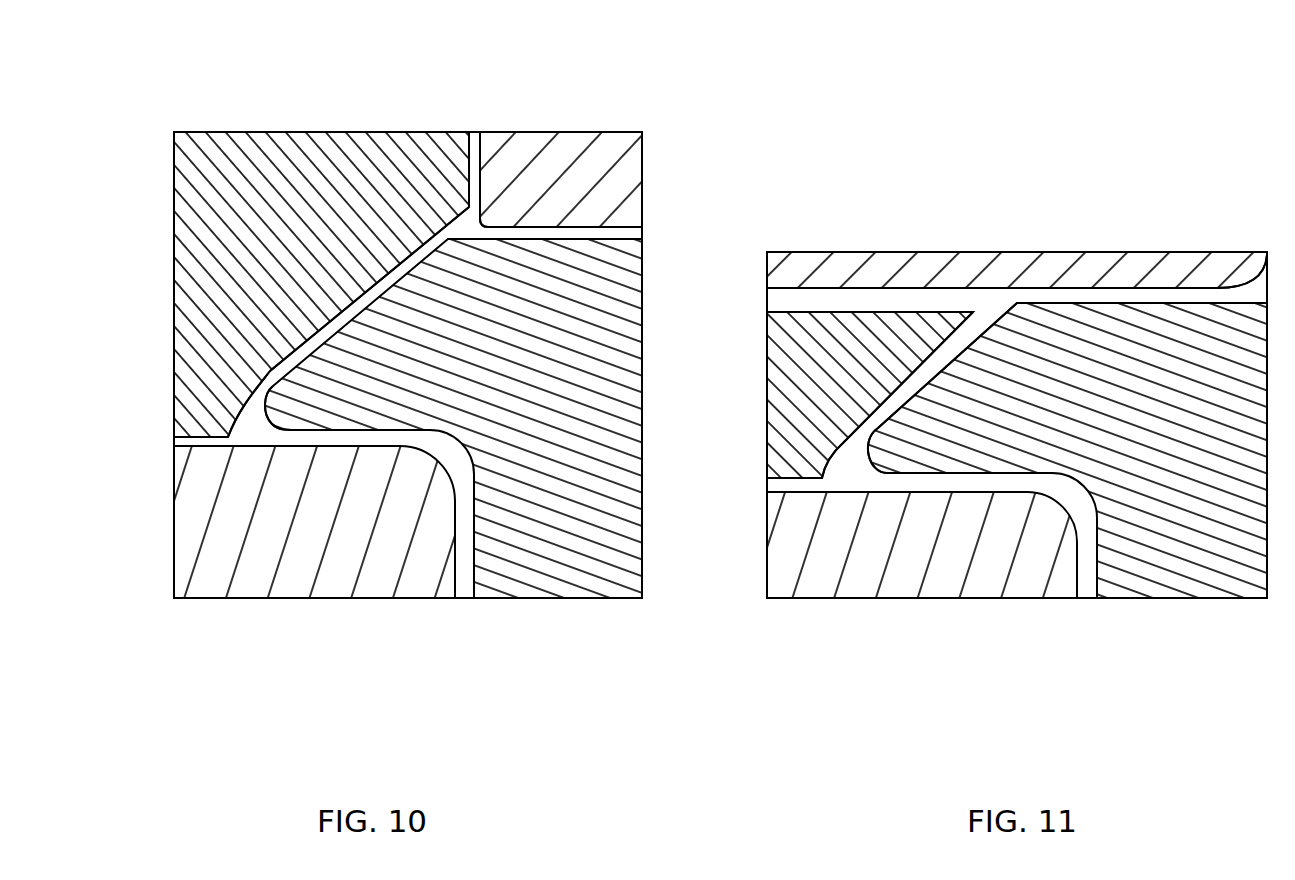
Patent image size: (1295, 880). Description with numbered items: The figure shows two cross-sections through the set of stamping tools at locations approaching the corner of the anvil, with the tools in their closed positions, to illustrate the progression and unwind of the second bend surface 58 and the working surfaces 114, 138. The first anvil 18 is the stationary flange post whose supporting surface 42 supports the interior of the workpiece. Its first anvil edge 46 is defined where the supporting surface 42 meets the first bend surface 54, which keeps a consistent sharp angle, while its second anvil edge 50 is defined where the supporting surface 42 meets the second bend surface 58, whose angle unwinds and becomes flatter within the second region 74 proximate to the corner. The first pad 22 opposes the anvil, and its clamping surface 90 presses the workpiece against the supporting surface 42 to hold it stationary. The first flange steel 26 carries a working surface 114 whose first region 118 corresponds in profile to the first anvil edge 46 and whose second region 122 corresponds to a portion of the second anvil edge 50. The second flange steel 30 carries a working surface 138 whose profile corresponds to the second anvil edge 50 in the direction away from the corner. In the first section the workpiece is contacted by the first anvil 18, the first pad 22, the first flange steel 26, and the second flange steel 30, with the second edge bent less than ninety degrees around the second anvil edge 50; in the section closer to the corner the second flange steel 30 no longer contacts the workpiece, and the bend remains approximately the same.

In FIG. 10, the first anvil 18 is at (570, 538).
In FIG. 11, the first anvil 18 is at (1067, 450).
In FIG. 10, the first pad 22 is at (264, 190).
In FIG. 11, the first pad 22 is at (893, 322).
In FIG. 10, the first flange steel 26 is at (212, 577).
In FIG. 11, the first flange steel 26 is at (945, 262).
In FIG. 10, the second flange steel 30 is at (608, 160).
In FIG. 10, the supporting surface 42 is at (300, 347).
In FIG. 11, the supporting surface 42 is at (870, 338).
In FIG. 10, the first anvil edge 46 is at (267, 410).
In FIG. 11, the first anvil edge 46 is at (868, 453).
In FIG. 10, the second anvil edge 50 is at (445, 240).
In FIG. 11, the second anvil edge 50 is at (1017, 303).
In FIG. 10, the first bend surface 54 is at (308, 450).
In FIG. 10, the second bend surface 58 is at (481, 224).
In FIG. 11, the second bend surface 58 is at (1050, 302).
In FIG. 10, the second region 74 is at (508, 238).
In FIG. 11, the second region 74 is at (1080, 303).
In FIG. 10, the clamping surface 90 is at (282, 382).
In FIG. 11, the clamping surface 90 is at (912, 377).
In FIG. 10, the working surface 114 is at (355, 447).
In FIG. 11, the working surface 114 is at (953, 492).
In FIG. 10, the first region 118 is at (318, 447).
In FIG. 11, the first region 118 is at (927, 492).
In FIG. 11, the second region 122 is at (1185, 270).
In FIG. 10, the working surface 138 is at (643, 190).